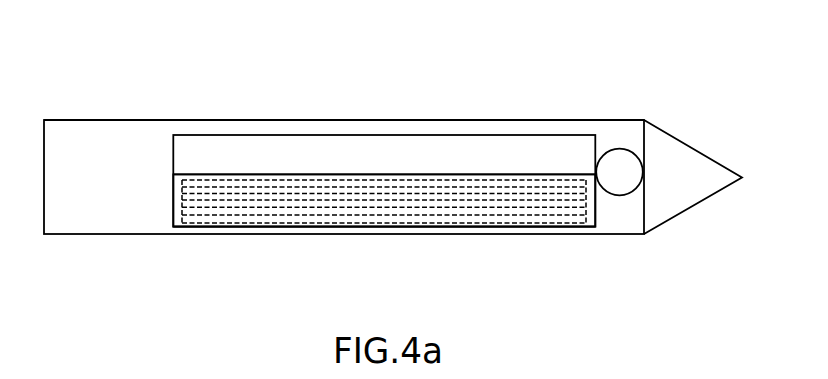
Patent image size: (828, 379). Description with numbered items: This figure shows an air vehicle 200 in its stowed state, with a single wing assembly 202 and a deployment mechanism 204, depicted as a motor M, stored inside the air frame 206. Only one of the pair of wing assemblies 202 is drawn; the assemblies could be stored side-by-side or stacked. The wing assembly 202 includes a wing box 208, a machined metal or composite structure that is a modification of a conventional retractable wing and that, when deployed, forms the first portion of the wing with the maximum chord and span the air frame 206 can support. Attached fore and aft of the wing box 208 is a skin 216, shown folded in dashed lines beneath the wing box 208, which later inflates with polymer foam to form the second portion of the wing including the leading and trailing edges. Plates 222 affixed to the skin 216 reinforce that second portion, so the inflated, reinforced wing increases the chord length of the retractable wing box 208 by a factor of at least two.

The air vehicle 200 is at (133, 72).
The wing assembly 202 is at (157, 145).
The deployment mechanism 204 is at (612, 149).
The air frame 206 is at (238, 119).
The wing box 208 is at (440, 150).
The skin 216 is at (173, 185).
The plates 222 is at (350, 227).